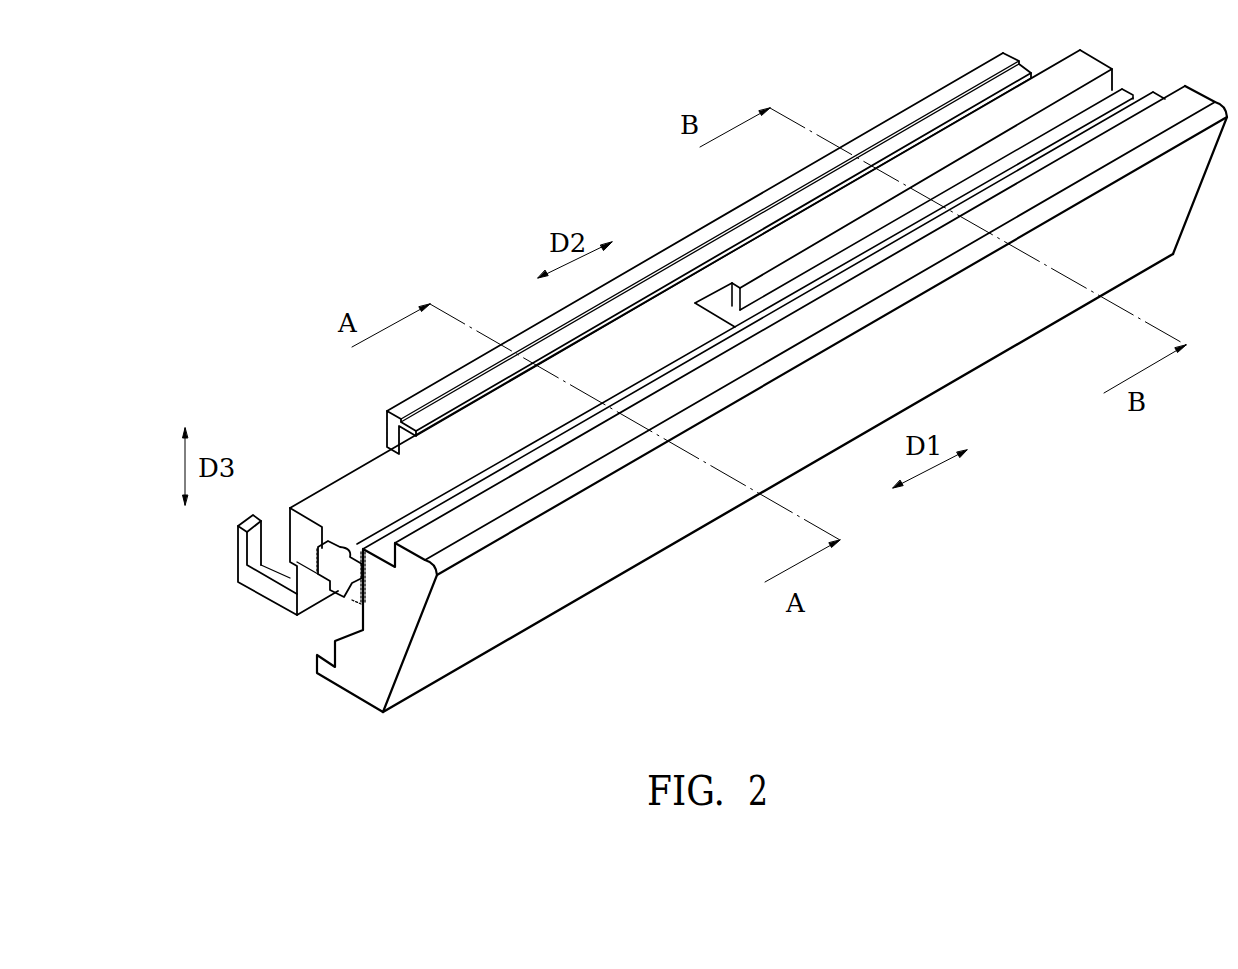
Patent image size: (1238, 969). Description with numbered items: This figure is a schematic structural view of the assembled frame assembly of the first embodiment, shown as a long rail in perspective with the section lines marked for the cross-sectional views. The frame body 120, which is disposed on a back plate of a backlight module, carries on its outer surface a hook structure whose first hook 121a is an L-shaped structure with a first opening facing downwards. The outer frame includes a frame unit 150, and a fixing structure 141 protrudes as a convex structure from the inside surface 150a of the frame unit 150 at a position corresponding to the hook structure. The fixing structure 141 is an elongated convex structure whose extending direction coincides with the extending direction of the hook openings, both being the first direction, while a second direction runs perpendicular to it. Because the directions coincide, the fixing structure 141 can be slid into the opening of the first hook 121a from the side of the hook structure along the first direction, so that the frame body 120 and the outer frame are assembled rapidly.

The frame body 120 is at (255, 580).
The first hook 121a is at (338, 545).
The fixing structure 141 is at (340, 573).
The frame unit 150 is at (367, 682).
The inside surface 150a is at (358, 608).